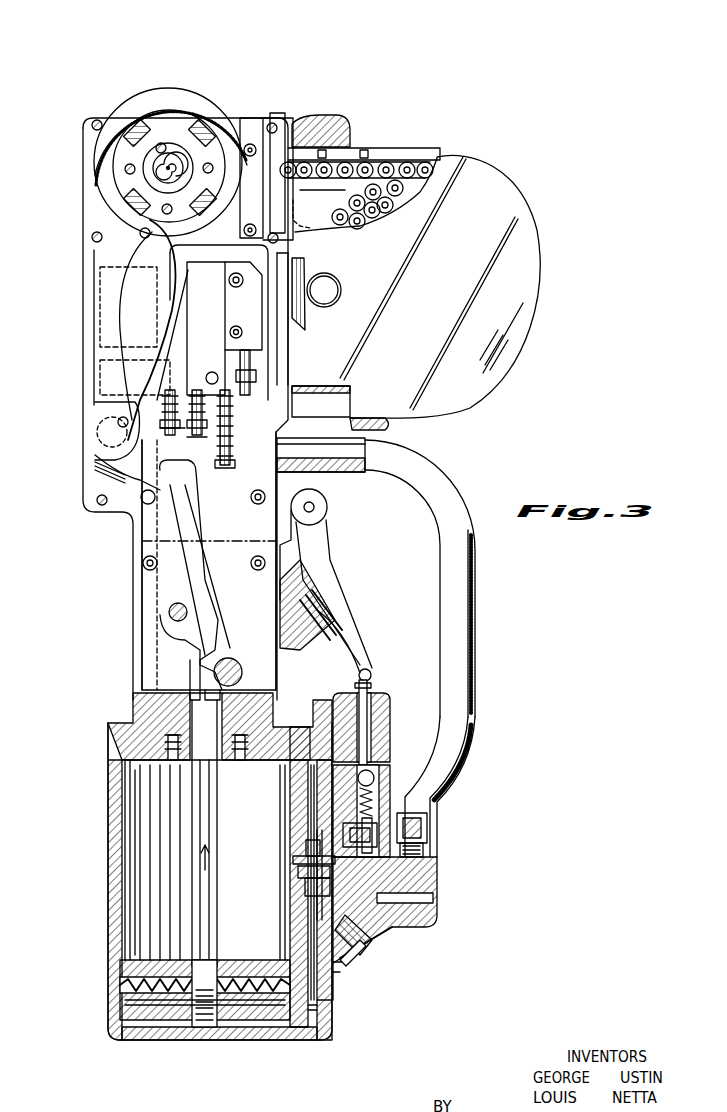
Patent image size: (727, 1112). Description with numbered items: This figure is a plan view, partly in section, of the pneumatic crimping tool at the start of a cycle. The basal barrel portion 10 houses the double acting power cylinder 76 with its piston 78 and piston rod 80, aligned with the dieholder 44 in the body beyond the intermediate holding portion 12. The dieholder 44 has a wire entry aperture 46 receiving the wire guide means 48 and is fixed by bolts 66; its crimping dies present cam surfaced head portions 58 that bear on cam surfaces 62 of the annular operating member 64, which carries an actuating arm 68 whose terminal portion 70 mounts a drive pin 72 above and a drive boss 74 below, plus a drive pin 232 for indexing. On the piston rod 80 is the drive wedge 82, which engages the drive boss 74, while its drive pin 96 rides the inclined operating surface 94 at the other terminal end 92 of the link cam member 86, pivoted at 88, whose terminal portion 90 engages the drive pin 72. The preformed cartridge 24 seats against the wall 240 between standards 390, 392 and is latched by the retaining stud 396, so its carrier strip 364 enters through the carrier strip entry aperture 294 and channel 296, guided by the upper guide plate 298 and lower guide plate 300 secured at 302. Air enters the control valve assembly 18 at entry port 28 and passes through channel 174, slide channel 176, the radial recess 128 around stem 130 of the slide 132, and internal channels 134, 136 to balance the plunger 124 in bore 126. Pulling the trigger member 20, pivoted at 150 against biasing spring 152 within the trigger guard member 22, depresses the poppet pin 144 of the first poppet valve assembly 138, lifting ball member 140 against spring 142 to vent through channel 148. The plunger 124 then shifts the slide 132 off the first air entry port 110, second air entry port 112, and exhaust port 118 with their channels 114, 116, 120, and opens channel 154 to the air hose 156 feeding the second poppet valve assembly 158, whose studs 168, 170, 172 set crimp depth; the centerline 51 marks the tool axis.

The basal barrel portion 10 is at (106, 818).
The intermediate holding portion 12 is at (133, 573).
The control valve assembly 18 is at (438, 878).
The trigger member 20 is at (342, 612).
The trigger guard member 22 is at (470, 667).
The preformed cartridge 24 is at (538, 258).
The entry port 28 is at (372, 952).
The dieholder 44 is at (182, 124).
The wire entry aperture 46 is at (163, 150).
The wire guide means 48 is at (156, 165).
The center line 51 is at (207, 547).
The cam surfaced head portion 58 is at (125, 126).
The cam surfaces 62 is at (143, 118).
The operating member 64 is at (178, 108).
The bolts 66 is at (162, 205).
The actuating arm 68 is at (120, 254).
The terminal portion 70 is at (100, 410).
The drive pin 72 is at (112, 445).
The drive boss 74 is at (103, 426).
The double acting power cylinder 76 is at (125, 870).
The piston 78 is at (155, 965).
The piston rod 80 is at (197, 890).
The drive wedge 82 is at (208, 578).
The link cam member 86 is at (182, 553).
The pivot 88 is at (170, 615).
The terminal portion 90 is at (112, 468).
The other terminal end 92 is at (195, 642).
The inclined operating surface 94 is at (215, 672).
The drive pin 96 is at (150, 735).
The first air entry port 110 is at (306, 882).
The second air entry port 112 is at (313, 850).
The channel 114 is at (330, 1005).
The channel 116 is at (298, 800).
The venting or exhaust port 118 is at (298, 858).
The channel 120 is at (297, 870).
The plunger or spool 124 is at (424, 850).
The bore 126 is at (372, 826).
The radial recess 128 is at (425, 926).
The stem 130 is at (378, 946).
The valve operator or slide 132 is at (318, 888).
The internal channel 134 is at (395, 935).
The internal channel 136 is at (428, 830).
The first poppet valve assembly 138 is at (392, 715).
The ball member 140 is at (375, 778).
The spring 142 is at (376, 797).
The poppet pin 144 is at (367, 705).
The channel 148 is at (340, 725).
The pivot 150 is at (314, 510).
The biasing spring 152 is at (332, 608).
The channel 154 is at (434, 902).
The air hose 156 is at (346, 472).
The second poppet valve assembly 158 is at (215, 300).
The stud member 168 is at (170, 436).
The stud member 170 is at (197, 440).
The stud member 172 is at (222, 470).
The channel 174 is at (340, 963).
The slide channel 176 is at (336, 974).
The drive pin 232 is at (140, 233).
The wall 240 is at (286, 376).
The carrier strip entry aperture 294 is at (302, 232).
The channel 296 is at (270, 150).
The upper guide plate 298 is at (248, 142).
The lower guide plate 300 is at (290, 150).
The securement 302 is at (279, 240).
The carrier strip 364 is at (405, 175).
The standard 390 is at (343, 128).
The standard 392 is at (360, 422).
The retaining stud 396 is at (330, 290).